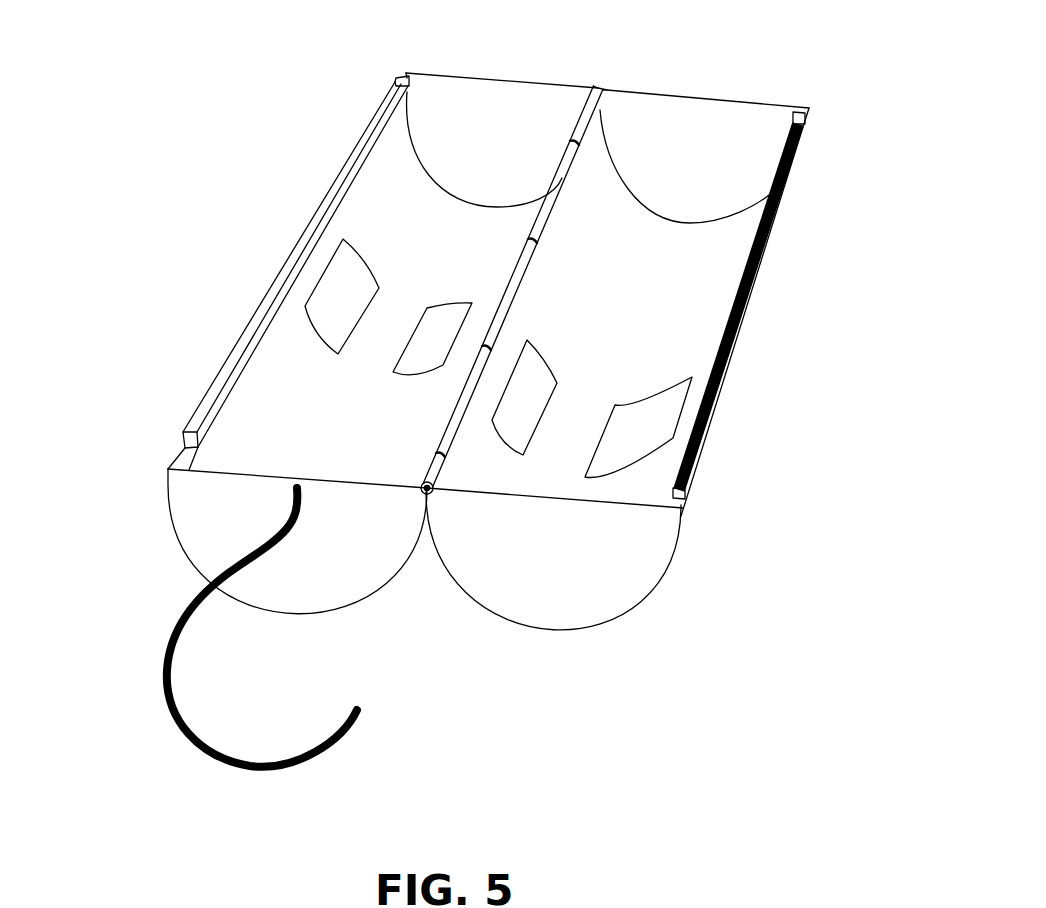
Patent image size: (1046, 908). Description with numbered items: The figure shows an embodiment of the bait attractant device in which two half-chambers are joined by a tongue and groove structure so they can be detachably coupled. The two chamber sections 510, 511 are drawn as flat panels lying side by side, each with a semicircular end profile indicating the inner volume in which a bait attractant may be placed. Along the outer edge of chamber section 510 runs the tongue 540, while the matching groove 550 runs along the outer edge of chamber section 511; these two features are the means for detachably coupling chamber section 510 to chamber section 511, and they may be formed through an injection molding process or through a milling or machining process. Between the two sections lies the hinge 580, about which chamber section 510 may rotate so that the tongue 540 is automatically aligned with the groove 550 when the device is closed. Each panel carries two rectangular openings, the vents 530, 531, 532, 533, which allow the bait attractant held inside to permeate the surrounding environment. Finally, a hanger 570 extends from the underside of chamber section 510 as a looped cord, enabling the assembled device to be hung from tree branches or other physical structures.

The chamber section 510 is at (223, 513).
The chamber section 511 is at (615, 553).
The vent 530 is at (343, 298).
The vent 531 is at (443, 328).
The vent 532 is at (527, 408).
The vent 533 is at (620, 437).
The tongue 540 is at (272, 272).
The groove 550 is at (752, 292).
The hanger 570 is at (177, 617).
The hinge 580 is at (424, 496).